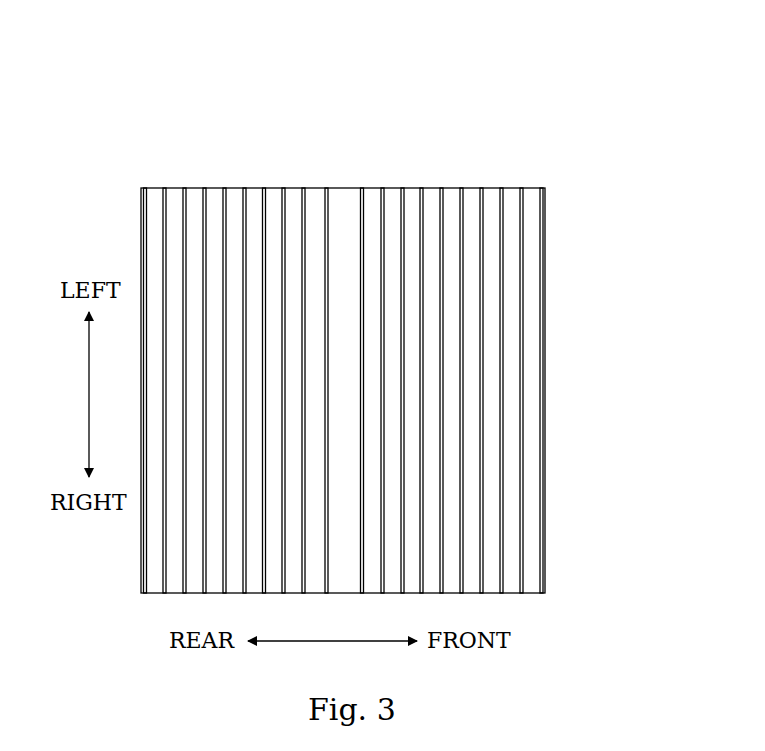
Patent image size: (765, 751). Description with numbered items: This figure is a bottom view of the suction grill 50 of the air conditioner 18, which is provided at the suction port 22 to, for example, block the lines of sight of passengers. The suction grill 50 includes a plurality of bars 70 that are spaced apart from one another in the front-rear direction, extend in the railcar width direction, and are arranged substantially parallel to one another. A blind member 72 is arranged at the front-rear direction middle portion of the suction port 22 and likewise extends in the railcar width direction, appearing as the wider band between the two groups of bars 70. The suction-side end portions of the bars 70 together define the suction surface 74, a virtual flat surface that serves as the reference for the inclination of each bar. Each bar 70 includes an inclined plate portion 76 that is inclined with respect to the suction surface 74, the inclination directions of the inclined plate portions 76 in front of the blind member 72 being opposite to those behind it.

The air conditioner 18 is at (273, 80).
The suction port 22 is at (151, 174).
The suction grill 50 is at (189, 184).
The bars 70 is at (410, 266).
The blind member 72 is at (343, 205).
The suction surface 74 is at (510, 326).
The inclined plate portion 76 is at (412, 203).